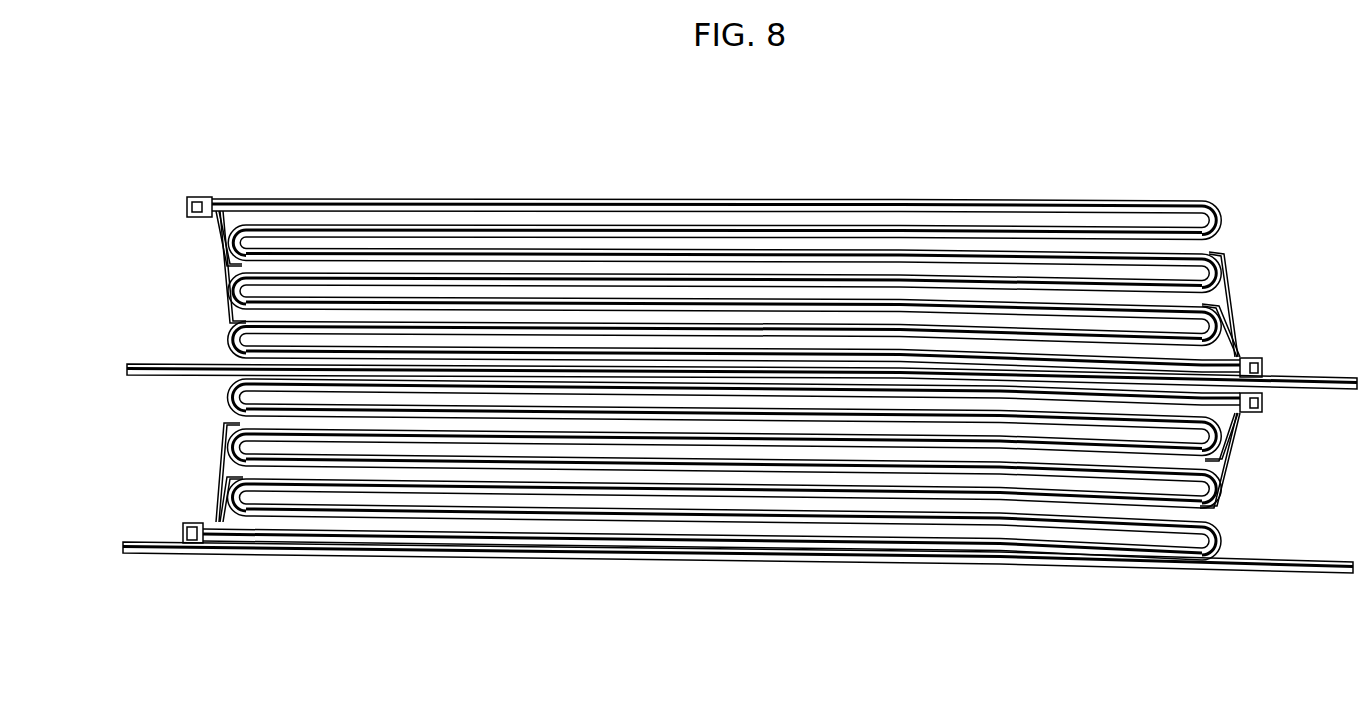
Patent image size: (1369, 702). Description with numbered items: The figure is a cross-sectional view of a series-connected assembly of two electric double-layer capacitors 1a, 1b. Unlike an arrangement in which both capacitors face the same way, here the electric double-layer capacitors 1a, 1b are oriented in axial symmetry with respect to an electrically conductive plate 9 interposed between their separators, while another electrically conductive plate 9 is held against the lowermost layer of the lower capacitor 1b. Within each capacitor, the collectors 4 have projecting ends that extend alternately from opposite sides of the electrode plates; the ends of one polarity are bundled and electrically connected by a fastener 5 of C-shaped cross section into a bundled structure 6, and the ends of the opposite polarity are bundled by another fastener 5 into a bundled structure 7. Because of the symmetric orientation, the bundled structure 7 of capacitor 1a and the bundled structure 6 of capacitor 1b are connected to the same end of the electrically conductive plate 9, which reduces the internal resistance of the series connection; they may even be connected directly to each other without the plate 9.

The electric double-layer capacitor 1a is at (862, 191).
The electric double-layer capacitor 1b is at (850, 564).
The collector 4 is at (226, 262).
The fastener 5 is at (186, 207).
The bundled structure 6 is at (200, 189).
The bundled structure 7 is at (1259, 351).
The electrically conductive plate 9 is at (1330, 375).